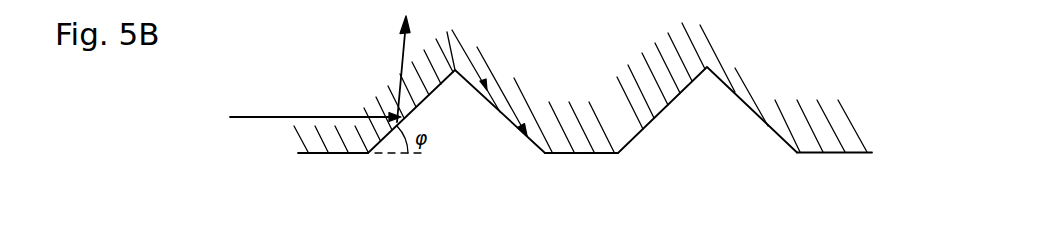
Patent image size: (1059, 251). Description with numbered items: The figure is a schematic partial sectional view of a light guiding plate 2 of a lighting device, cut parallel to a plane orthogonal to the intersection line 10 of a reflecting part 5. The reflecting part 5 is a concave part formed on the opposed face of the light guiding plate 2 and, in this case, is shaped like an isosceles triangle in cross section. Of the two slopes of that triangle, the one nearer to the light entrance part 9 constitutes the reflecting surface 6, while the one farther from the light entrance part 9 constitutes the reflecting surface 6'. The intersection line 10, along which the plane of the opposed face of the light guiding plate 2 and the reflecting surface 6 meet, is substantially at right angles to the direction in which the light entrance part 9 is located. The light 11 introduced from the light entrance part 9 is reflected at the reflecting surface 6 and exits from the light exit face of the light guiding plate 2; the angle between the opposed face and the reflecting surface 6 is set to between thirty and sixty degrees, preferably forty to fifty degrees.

The light guiding plate 2 is at (826, 153).
The reflecting part 5 is at (452, 166).
The reflecting surface 6 is at (448, 70).
The reflecting surface 6' is at (513, 83).
The light entrance part 9 is at (242, 128).
The intersection line 10 is at (368, 154).
The light 11 is at (282, 117).